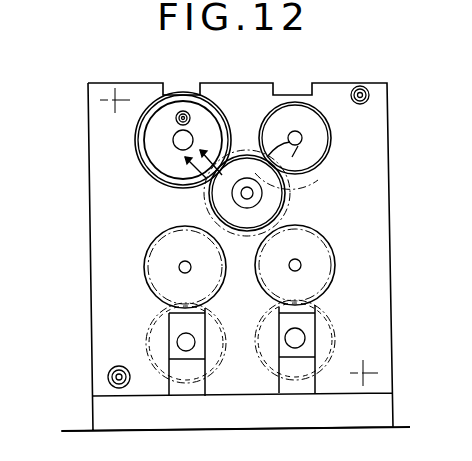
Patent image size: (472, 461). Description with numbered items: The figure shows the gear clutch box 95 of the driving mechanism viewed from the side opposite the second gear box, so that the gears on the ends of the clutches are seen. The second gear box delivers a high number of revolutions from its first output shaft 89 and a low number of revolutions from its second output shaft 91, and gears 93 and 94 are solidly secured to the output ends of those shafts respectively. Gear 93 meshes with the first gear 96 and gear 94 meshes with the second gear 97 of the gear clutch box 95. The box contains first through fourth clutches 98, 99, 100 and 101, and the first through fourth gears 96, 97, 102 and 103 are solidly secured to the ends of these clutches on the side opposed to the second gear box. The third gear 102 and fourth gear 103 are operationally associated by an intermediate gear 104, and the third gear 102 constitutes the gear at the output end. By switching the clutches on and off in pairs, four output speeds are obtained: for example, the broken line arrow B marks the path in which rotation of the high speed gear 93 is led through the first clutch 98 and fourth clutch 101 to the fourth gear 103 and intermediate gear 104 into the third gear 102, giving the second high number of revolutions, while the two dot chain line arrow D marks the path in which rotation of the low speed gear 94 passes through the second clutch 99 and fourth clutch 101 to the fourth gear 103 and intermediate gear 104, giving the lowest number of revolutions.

The first output shaft 89 is at (152, 352).
The second output shaft 91 is at (335, 313).
The gear 93 is at (160, 312).
The gear 94 is at (340, 357).
The gear clutch box 95 is at (391, 167).
The first gear 96 is at (162, 250).
The second gear 97 is at (330, 260).
The first clutch 98 is at (177, 317).
The second clutch 99 is at (268, 325).
The third clutch 100 is at (183, 92).
The fourth clutch 101 is at (297, 101).
The third gear 102 is at (137, 152).
The fourth gear 103 is at (331, 137).
The intermediate gear 104 is at (287, 200).
The broken line arrow B is at (306, 178).
The two dot chain line arrow D is at (257, 152).